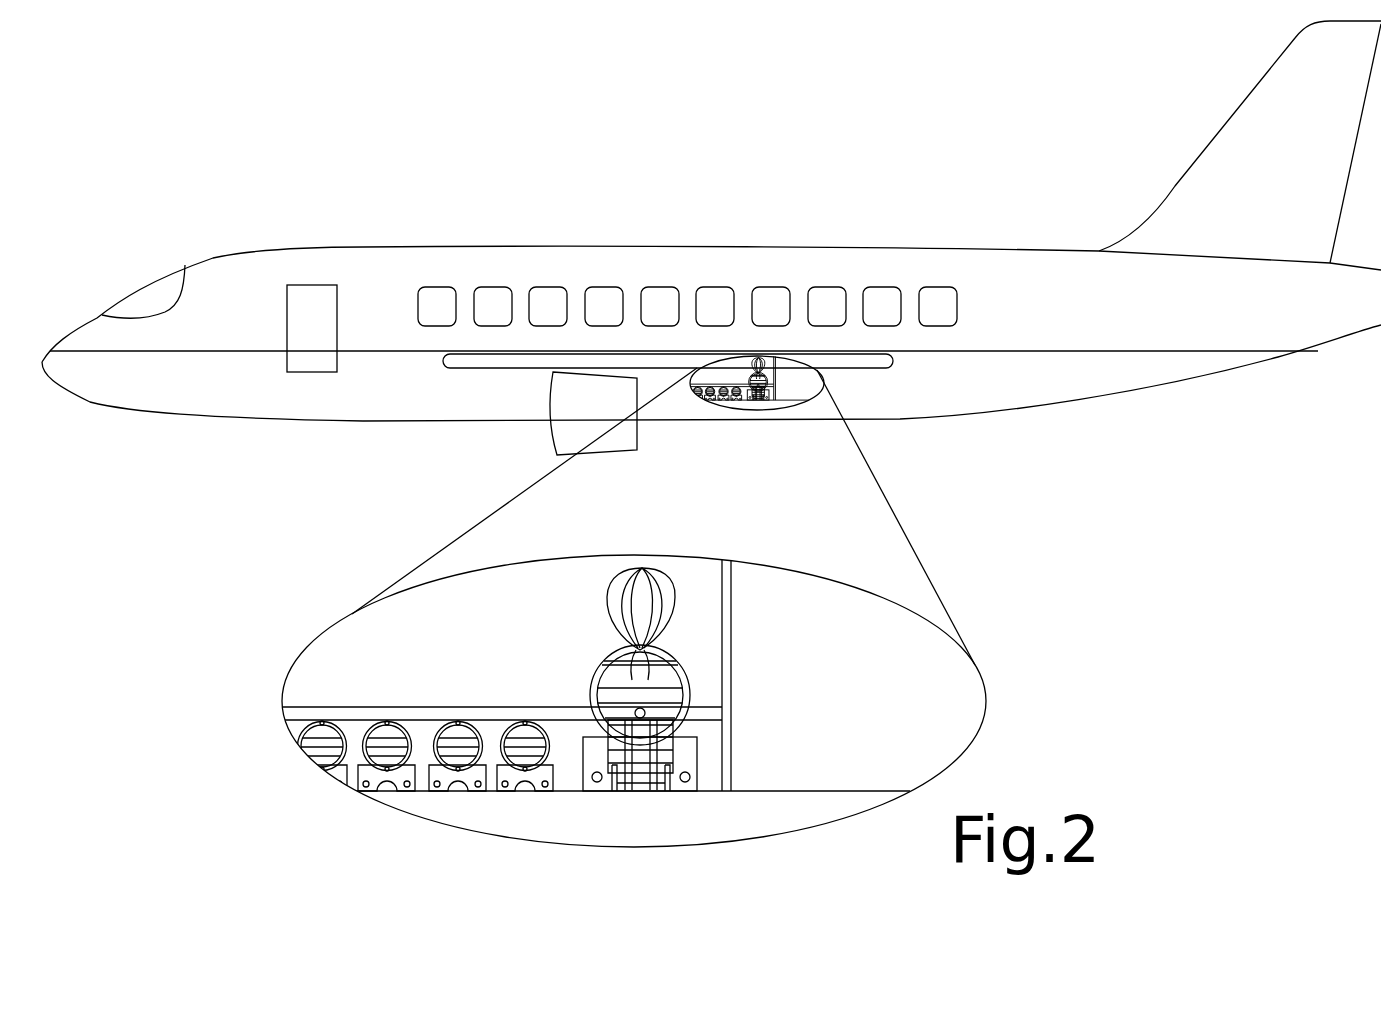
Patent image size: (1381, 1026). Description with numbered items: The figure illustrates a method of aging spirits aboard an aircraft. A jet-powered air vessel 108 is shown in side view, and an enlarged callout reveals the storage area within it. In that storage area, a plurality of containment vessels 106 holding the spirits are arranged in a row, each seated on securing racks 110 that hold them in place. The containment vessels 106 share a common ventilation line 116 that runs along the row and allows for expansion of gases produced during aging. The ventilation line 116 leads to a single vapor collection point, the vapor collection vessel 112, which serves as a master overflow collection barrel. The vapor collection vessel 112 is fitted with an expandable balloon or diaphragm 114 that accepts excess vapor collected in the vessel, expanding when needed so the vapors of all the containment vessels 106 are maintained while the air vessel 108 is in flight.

The air vessel 108 is at (388, 246).
The containment vessels 106 is at (388, 752).
The securing racks 110 is at (473, 783).
The vapor collection vessel 112 is at (658, 678).
The expandable balloon or diaphragm 114 is at (642, 588).
The ventilation line 116 is at (402, 705).